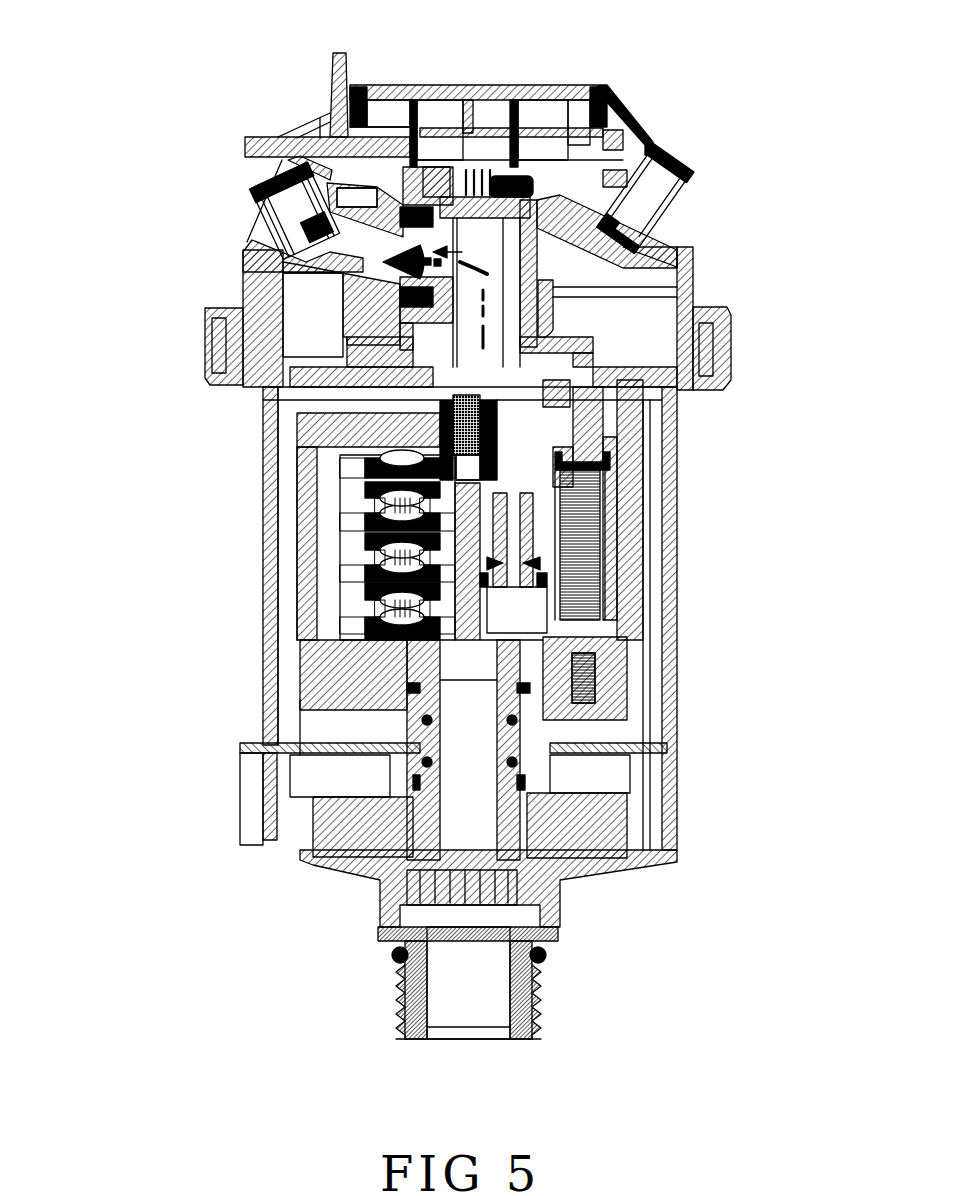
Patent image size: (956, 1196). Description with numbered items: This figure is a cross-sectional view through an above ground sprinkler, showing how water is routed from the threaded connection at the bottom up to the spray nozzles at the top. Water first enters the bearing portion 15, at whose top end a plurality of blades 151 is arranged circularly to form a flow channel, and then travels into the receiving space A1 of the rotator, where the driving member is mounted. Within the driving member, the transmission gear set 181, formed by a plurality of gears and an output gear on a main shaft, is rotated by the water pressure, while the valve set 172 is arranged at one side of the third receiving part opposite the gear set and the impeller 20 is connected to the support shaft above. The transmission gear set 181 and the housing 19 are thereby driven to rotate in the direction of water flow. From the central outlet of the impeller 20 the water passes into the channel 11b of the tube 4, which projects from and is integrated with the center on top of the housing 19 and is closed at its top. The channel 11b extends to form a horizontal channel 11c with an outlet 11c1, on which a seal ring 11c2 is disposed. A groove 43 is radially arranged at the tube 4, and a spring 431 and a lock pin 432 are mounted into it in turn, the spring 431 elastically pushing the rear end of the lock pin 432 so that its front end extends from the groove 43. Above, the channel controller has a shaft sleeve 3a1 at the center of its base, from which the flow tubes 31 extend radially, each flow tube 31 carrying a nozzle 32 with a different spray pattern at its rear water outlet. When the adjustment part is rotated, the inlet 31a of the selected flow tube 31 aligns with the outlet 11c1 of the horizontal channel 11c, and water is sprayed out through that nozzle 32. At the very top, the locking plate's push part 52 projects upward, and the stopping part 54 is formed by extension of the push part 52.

The push part 52 is at (336, 60).
The stopping part 54 is at (283, 142).
The groove 43 is at (490, 165).
The spring 431 is at (460, 168).
The lock pin 432 is at (533, 173).
The flow tube 31 is at (327, 210).
The nozzle 32 is at (395, 250).
The inlet 31a is at (392, 283).
The horizontal channel 11c is at (530, 258).
The outlet 11c1 is at (365, 307).
The seal ring 11c2 is at (385, 322).
The channel 11b is at (553, 290).
The shaft sleeve 3a1 is at (557, 307).
The tube 4 is at (506, 285).
The impeller 20 is at (567, 393).
The valve set 172 is at (603, 470).
The housing 19 is at (672, 570).
The receiving space A1 is at (338, 494).
The transmission gear set 181 is at (363, 543).
The blades 151 is at (530, 667).
The bearing portion 15 is at (513, 745).